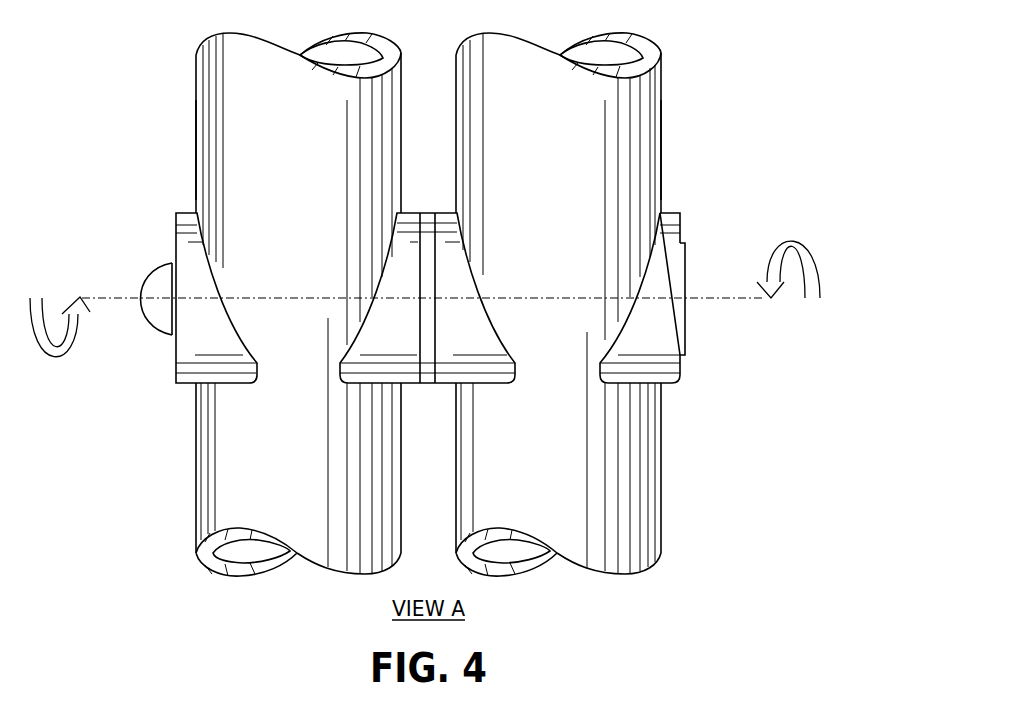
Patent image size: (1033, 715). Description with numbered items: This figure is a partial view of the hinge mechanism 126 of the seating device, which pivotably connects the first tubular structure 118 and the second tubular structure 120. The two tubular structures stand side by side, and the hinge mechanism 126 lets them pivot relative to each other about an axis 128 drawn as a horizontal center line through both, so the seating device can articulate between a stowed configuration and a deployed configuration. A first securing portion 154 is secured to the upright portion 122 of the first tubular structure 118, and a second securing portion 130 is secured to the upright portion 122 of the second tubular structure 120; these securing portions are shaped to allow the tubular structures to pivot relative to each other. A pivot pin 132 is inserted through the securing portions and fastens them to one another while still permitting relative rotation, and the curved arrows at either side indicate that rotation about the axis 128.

The first tubular structure 118 is at (314, 152).
The second tubular structure 120 is at (578, 152).
The upright portion 122 is at (193, 145).
The hinge mechanism 126 is at (687, 265).
The axis 128 is at (707, 300).
The second securing portion 130 is at (680, 223).
The pivot pin 132 is at (147, 282).
The first securing portion 154 is at (177, 228).